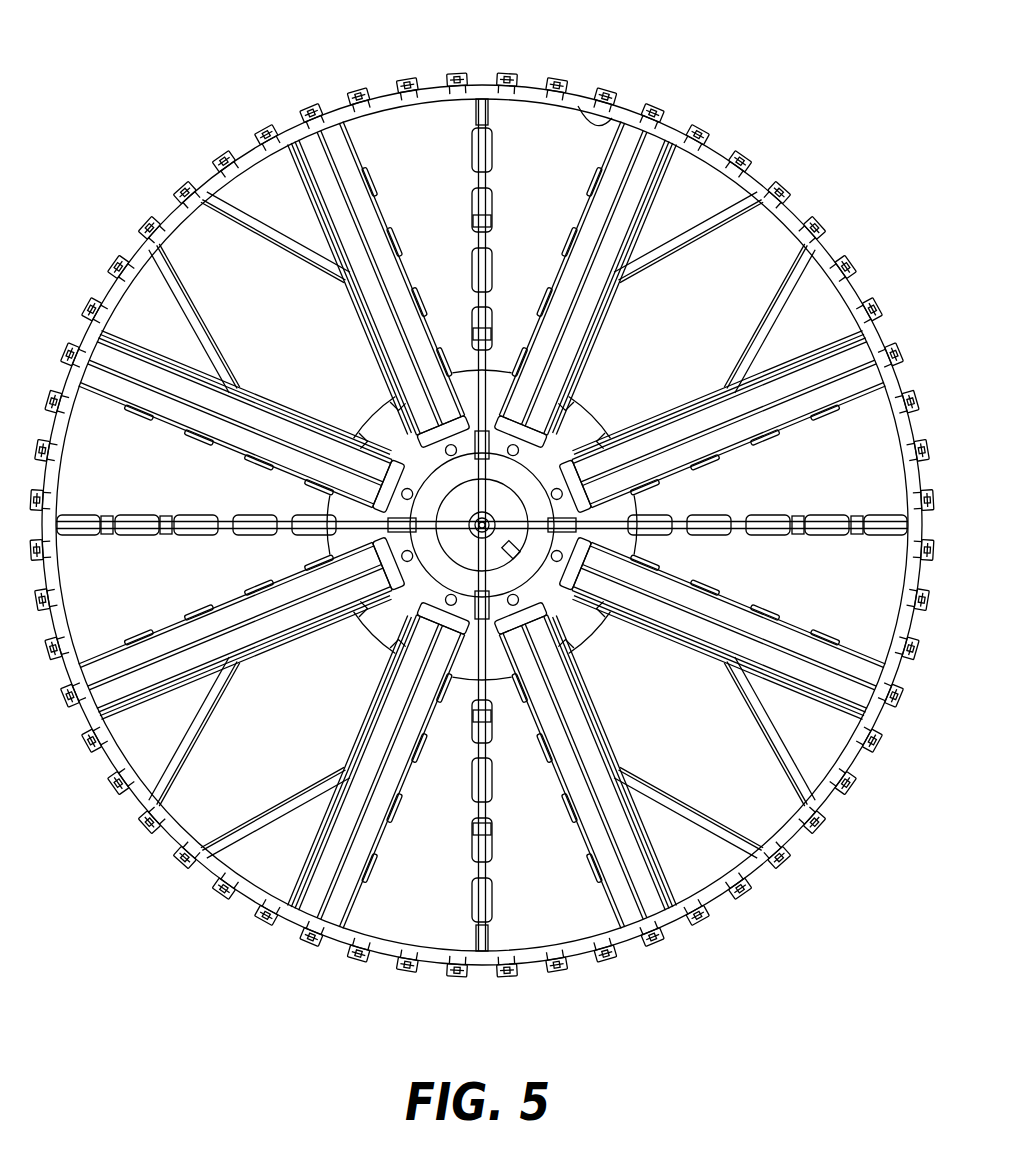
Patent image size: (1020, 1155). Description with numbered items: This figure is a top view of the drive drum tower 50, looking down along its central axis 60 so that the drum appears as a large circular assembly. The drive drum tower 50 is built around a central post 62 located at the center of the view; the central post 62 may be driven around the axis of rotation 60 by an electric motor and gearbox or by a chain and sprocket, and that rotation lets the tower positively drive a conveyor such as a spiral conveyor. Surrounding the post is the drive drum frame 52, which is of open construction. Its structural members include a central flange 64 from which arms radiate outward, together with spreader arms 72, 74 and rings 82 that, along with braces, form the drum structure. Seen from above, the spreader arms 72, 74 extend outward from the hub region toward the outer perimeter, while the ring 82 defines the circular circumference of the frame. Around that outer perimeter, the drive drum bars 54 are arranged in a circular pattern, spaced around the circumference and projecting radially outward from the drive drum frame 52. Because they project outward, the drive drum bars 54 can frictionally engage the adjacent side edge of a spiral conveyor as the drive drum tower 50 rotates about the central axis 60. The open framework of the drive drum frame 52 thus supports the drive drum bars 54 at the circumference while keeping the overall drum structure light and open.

The drive drum tower 50 is at (172, 36).
The drive drum frame 52 is at (166, 202).
The drive drum bars 54 is at (226, 150).
The central axis 60 is at (488, 530).
The central post 62 is at (508, 507).
The central flange 64 is at (383, 406).
The spreader arm 72 is at (98, 470).
The spreader arm 74 is at (183, 331).
The ring 82 is at (600, 118).